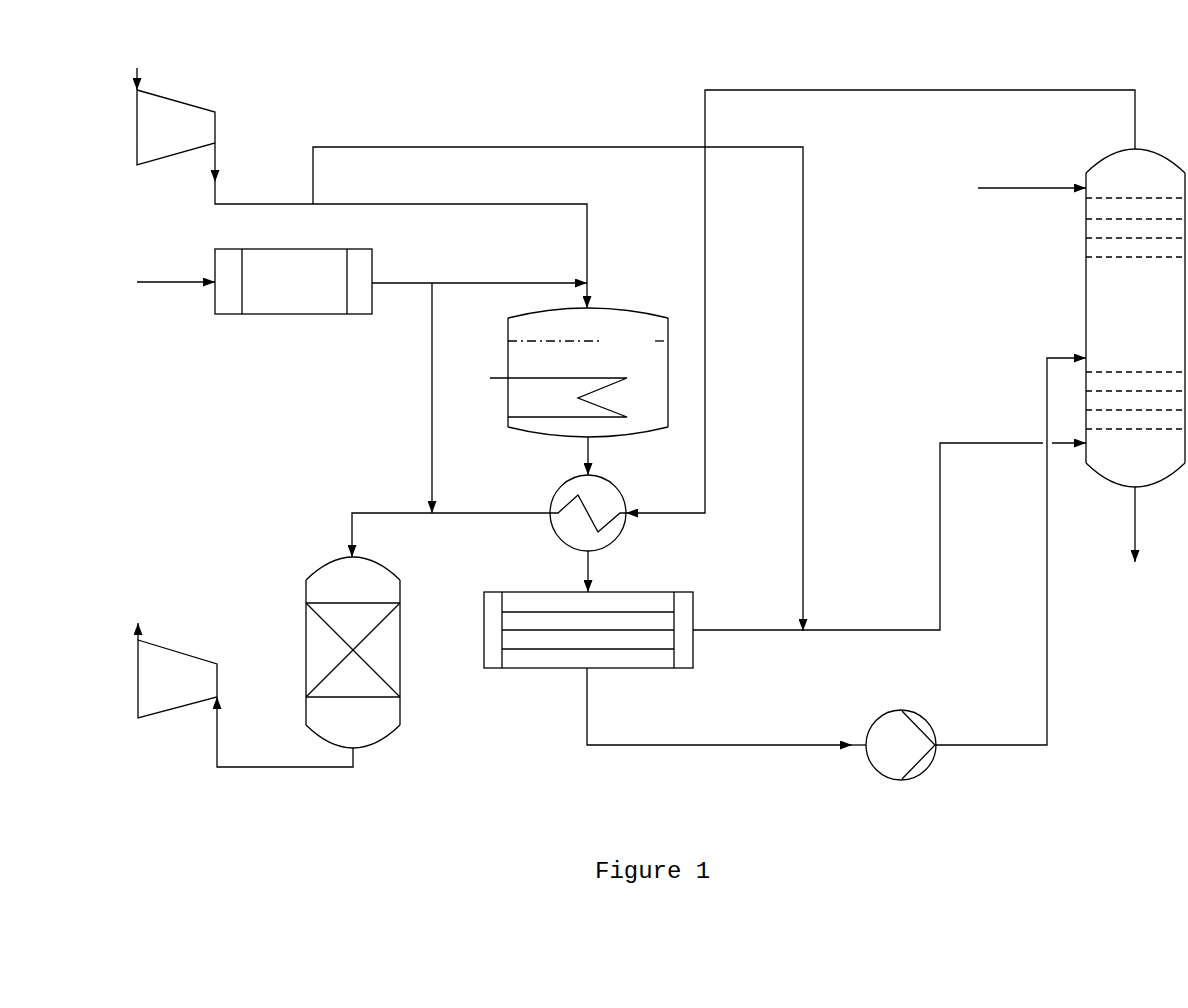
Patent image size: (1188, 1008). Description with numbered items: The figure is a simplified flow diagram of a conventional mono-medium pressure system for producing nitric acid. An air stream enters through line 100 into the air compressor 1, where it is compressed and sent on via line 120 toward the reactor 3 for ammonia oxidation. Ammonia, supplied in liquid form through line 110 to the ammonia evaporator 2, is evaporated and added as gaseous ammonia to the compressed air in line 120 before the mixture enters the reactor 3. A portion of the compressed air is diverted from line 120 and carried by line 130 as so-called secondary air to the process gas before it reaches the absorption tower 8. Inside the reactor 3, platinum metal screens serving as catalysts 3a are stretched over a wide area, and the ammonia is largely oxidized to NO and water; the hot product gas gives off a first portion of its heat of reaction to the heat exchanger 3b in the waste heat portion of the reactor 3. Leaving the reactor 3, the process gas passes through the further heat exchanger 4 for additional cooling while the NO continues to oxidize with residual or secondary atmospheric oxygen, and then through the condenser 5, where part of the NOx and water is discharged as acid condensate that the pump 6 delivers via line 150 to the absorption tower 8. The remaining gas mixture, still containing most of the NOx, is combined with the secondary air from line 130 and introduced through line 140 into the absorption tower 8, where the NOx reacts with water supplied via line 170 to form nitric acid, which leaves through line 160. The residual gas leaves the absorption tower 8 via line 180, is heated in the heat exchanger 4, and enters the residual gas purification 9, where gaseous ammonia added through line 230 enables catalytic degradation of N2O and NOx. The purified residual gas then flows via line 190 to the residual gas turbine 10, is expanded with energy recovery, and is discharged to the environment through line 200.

The air compressor 1 is at (176, 127).
The ammonia evaporator 2 is at (293, 281).
The reactor 3 is at (588, 372).
The catalysts 3a is at (588, 341).
The heat exchanger 3b is at (508, 417).
The heat exchanger 4 is at (588, 513).
The condenser 5 is at (588, 630).
The pump 6 is at (901, 745).
The absorption tower 8 is at (1135, 318).
The residual gas purification 9 is at (353, 652).
The residual gas turbine 10 is at (177, 679).
The line 100 is at (137, 63).
The line 110 is at (176, 266).
The line 120 is at (401, 225).
The line 130 is at (558, 374).
The line 140 is at (889, 552).
The line 150 is at (726, 721).
The line 160 is at (1135, 541).
The line 170 is at (1007, 188).
The line 180 is at (880, 286).
The line 190 is at (285, 746).
The line 200 is at (137, 615).
The line 230 is at (402, 398).